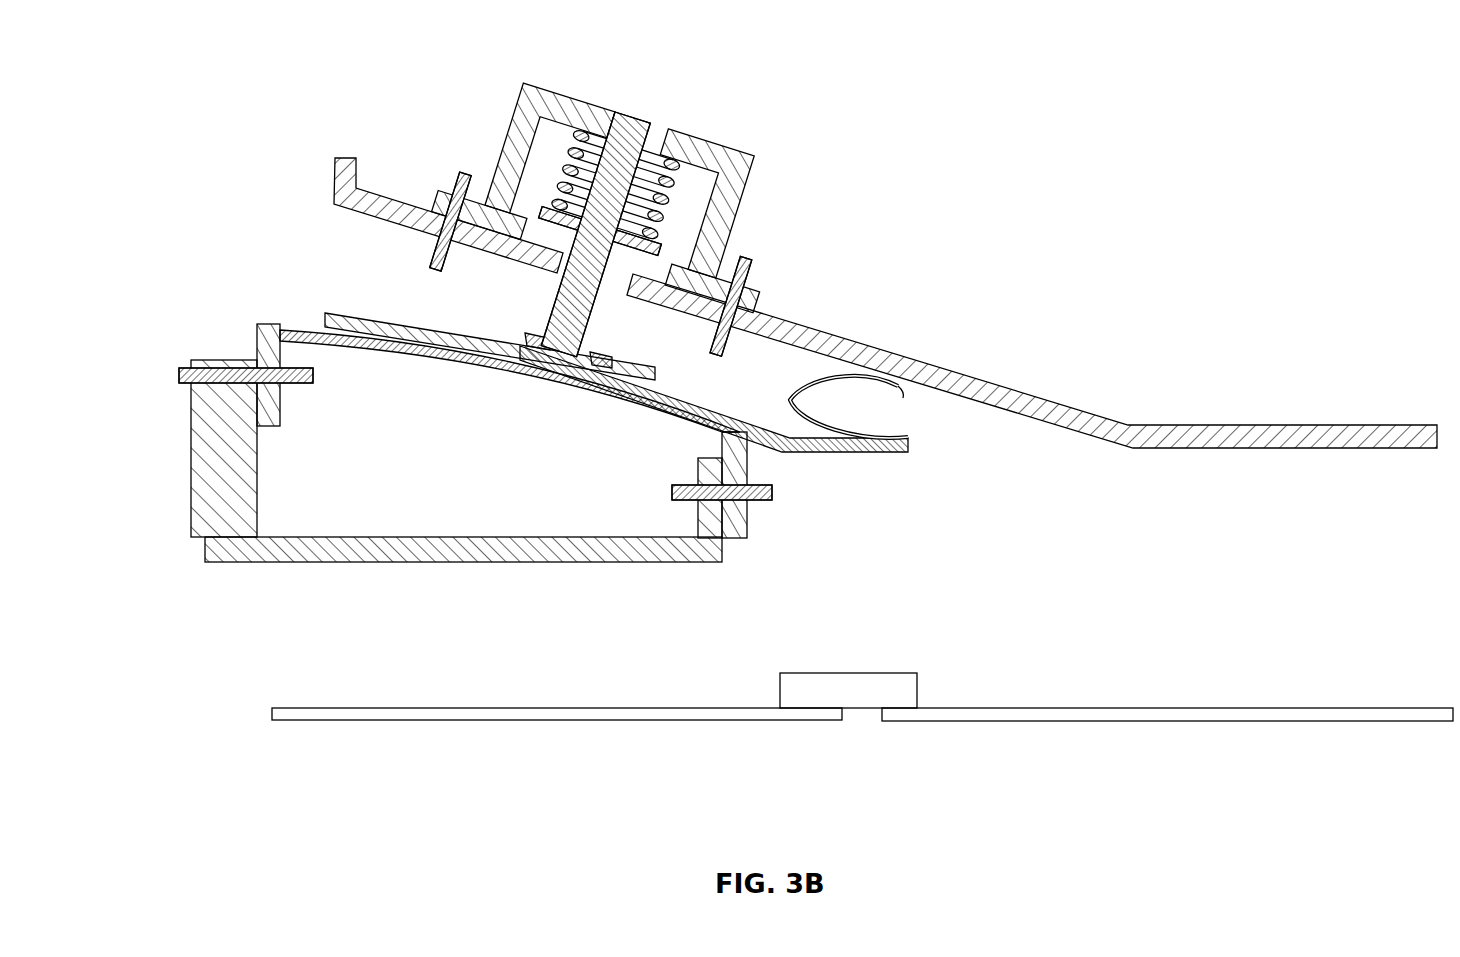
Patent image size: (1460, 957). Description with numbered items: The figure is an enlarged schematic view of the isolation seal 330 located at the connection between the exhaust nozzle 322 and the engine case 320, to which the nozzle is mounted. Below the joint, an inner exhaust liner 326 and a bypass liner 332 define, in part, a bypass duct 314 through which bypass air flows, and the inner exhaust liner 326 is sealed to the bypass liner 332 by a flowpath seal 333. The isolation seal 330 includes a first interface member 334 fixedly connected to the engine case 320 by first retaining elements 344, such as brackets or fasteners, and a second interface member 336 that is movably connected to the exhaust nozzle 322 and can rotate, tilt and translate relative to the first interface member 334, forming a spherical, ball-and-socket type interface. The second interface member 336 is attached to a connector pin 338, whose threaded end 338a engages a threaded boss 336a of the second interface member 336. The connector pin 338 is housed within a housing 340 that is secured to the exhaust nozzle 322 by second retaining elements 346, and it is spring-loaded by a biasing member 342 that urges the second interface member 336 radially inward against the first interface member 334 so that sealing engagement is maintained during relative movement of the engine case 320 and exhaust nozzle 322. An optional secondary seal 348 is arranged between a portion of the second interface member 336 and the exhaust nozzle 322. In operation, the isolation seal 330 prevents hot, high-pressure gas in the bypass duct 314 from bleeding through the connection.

The bypass duct 314 is at (738, 641).
The engine case 320 is at (365, 562).
The exhaust nozzle 322 is at (1315, 425).
The inner exhaust liner 326 is at (1200, 720).
The isolation seal 330 is at (810, 107).
The bypass liner 332 is at (482, 718).
The flowpath seal 333 is at (866, 705).
The first interface member 334 is at (418, 358).
The second interface member 336 is at (348, 313).
The threaded boss 336a is at (548, 345).
The connector pin 338 is at (635, 115).
The threaded end 338a is at (558, 343).
The housing 340 is at (528, 95).
The biasing member 342 is at (680, 180).
The first retaining elements 344 is at (177, 372).
The second retaining elements 346 is at (440, 198).
The secondary seal 348 is at (813, 388).